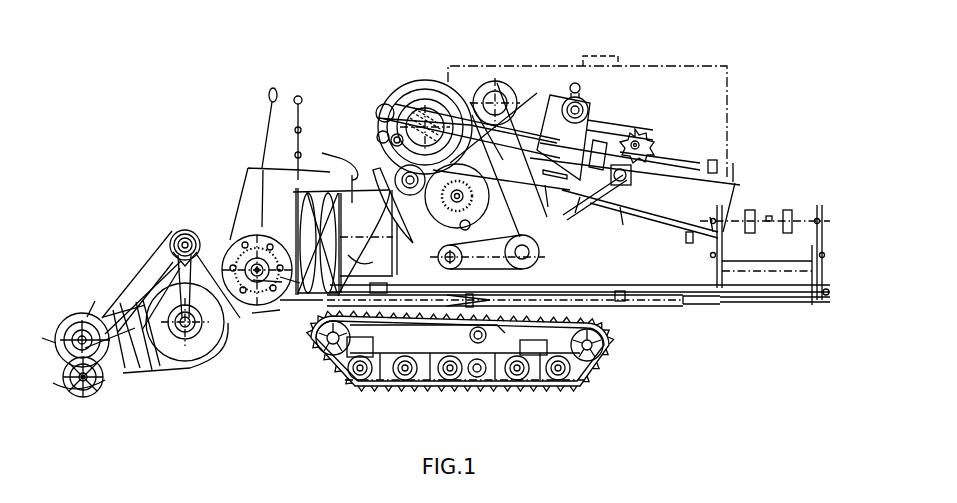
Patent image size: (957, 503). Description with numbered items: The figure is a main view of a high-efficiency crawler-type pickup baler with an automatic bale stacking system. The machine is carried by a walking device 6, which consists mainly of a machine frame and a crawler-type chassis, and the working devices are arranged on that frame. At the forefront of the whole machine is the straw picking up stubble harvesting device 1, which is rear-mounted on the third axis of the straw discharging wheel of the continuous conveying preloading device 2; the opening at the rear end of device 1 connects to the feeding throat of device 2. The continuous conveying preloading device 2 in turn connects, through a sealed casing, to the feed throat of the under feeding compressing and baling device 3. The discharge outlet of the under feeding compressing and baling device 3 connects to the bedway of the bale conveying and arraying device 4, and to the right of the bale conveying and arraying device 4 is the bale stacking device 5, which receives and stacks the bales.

The straw picking up stubble harvesting device 1 is at (200, 367).
The continuous conveying preloading device 2 is at (282, 310).
The under feeding compressing and baling device 3 is at (653, 145).
The bale conveying and arraying device 4 is at (777, 278).
The bale stacking device 5 is at (655, 92).
The walking device 6 is at (422, 335).